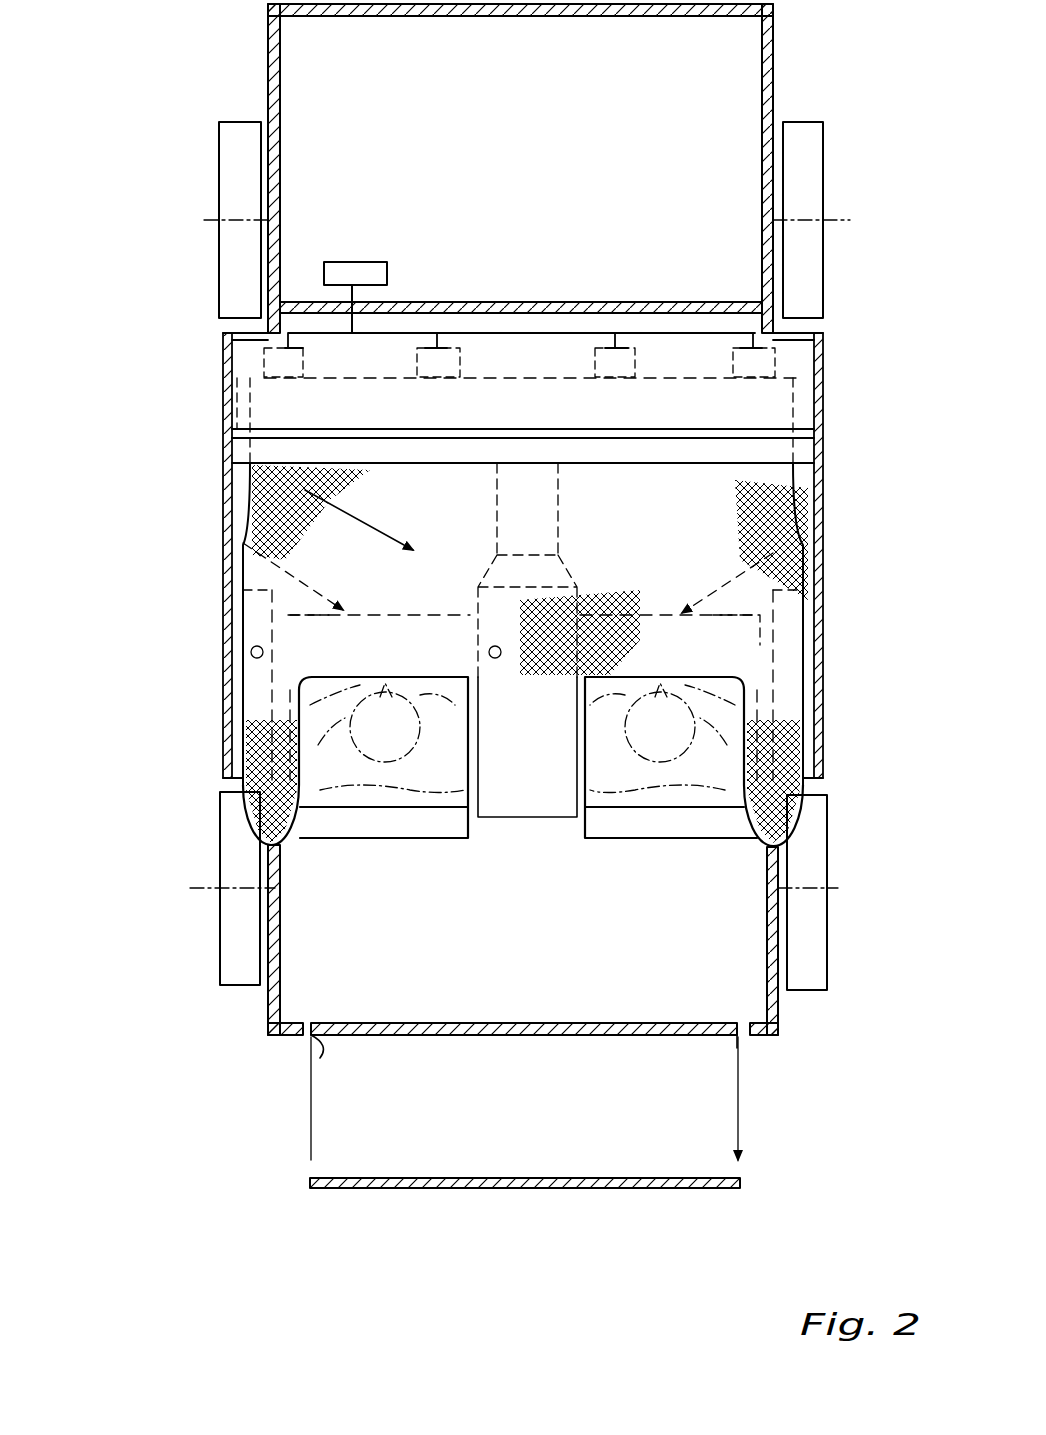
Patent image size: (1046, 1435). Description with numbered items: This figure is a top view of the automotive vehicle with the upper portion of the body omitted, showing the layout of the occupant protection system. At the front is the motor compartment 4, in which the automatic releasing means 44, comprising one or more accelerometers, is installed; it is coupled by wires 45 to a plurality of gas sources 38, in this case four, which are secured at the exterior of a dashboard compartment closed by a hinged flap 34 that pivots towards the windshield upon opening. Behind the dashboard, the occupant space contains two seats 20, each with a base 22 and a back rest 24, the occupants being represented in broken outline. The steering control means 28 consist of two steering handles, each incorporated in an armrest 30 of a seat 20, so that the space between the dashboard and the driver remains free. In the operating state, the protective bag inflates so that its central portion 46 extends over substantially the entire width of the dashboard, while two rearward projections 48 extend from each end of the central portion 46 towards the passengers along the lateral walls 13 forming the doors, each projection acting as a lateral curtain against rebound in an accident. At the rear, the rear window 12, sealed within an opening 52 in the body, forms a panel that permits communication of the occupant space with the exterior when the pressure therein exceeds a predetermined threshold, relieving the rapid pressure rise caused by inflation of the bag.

The motor compartment 4 is at (325, 63).
The rear window 12 is at (525, 1190).
The lateral walls 13 is at (220, 703).
The seats 20 is at (243, 543).
The base 22 is at (260, 640).
The back rest 24 is at (343, 820).
The steering control means 28 is at (247, 653).
The armrest 30 is at (470, 618).
The flap 34 is at (717, 435).
The gas source 38 is at (420, 362).
The automatic releasing means 44 is at (347, 272).
The wires 45 is at (357, 320).
The central portion 46 is at (247, 478).
The rearward projections 48 is at (240, 803).
The opening 52 is at (323, 1042).